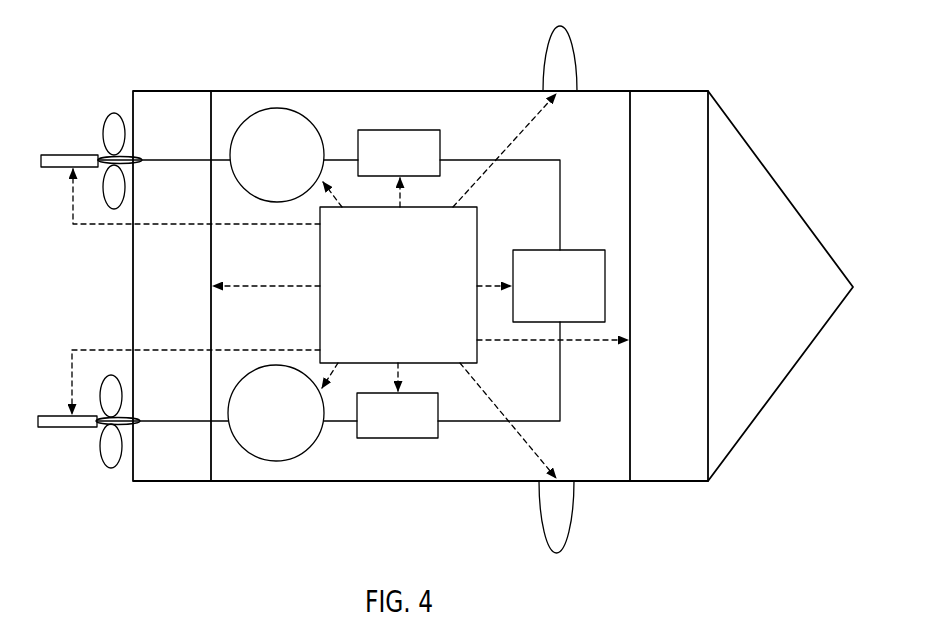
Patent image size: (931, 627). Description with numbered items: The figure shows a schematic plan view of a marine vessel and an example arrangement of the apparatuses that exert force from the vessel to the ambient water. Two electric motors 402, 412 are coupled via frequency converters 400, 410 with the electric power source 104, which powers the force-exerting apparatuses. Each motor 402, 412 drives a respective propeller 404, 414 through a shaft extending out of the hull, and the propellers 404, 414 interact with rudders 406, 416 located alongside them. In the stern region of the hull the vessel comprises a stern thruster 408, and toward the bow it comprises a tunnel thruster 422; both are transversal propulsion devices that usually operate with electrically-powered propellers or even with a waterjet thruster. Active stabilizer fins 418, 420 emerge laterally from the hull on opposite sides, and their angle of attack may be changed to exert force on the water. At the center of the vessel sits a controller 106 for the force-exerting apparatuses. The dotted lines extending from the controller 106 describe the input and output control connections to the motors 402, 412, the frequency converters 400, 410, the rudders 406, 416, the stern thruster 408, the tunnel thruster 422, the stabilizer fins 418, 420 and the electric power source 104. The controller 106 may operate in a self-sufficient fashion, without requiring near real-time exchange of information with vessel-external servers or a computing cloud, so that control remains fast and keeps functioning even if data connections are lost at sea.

The electric power source 104 is at (545, 283).
The controller 106 is at (362, 297).
The frequency converter 400 is at (360, 164).
The electric motor 402 is at (263, 156).
The propeller 404 is at (114, 113).
The rudder 406 is at (56, 155).
The stern thruster 408 is at (158, 266).
The frequency converter 410 is at (359, 426).
The electric motor 412 is at (262, 414).
The propeller 414 is at (111, 468).
The rudder 416 is at (55, 427).
The active stabilizer fin 418 is at (577, 77).
The active stabilizer fin 420 is at (574, 500).
The tunnel thruster 422 is at (654, 266).